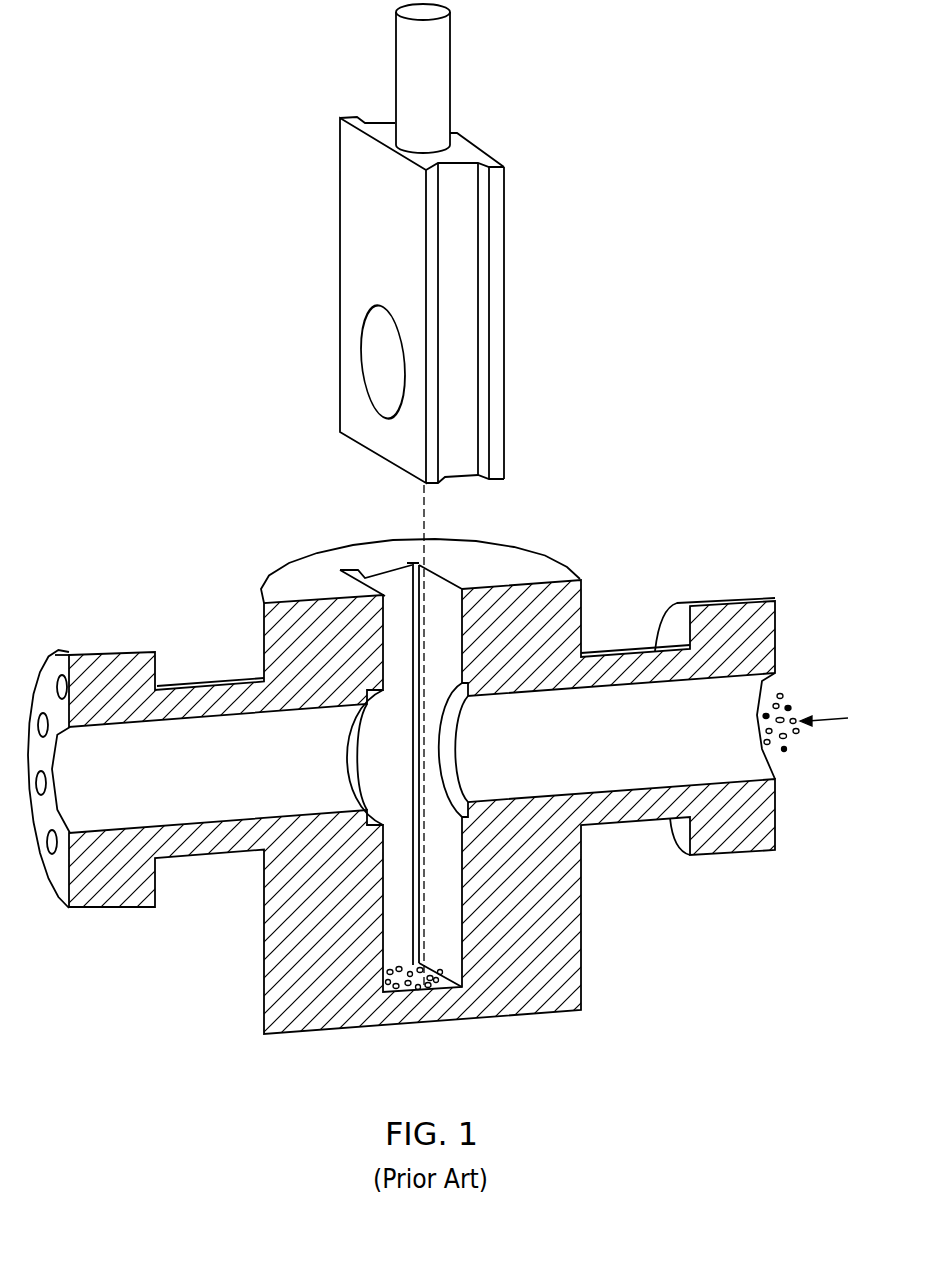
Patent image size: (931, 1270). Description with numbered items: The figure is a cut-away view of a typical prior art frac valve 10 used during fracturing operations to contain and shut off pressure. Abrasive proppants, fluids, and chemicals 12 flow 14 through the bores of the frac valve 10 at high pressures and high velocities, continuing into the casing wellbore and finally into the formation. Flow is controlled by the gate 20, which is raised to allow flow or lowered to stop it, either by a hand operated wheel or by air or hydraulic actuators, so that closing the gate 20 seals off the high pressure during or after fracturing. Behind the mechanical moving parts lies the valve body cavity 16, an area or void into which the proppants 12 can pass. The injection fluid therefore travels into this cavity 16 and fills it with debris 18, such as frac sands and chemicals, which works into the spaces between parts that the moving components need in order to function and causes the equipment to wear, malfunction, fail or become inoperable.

The frac valve 10 is at (245, 962).
The abrasive proppants, fluids, and chemicals 12 is at (783, 740).
The flow 14 is at (840, 718).
The valve body cavity 16 is at (440, 967).
The debris 18 is at (423, 988).
The gate 20 is at (506, 403).